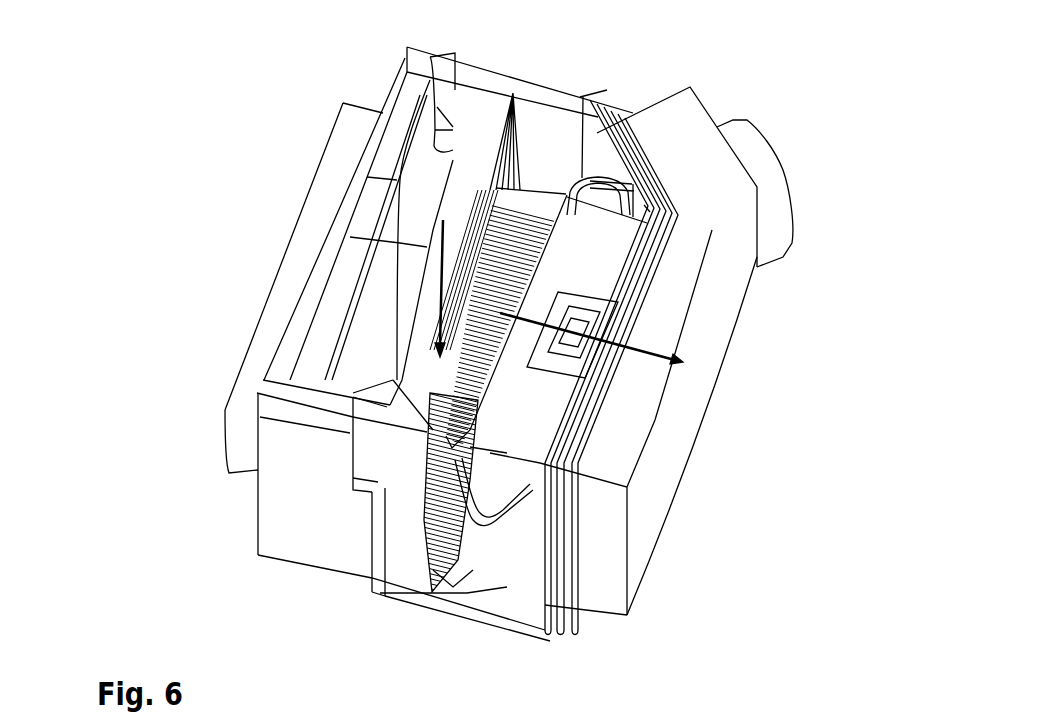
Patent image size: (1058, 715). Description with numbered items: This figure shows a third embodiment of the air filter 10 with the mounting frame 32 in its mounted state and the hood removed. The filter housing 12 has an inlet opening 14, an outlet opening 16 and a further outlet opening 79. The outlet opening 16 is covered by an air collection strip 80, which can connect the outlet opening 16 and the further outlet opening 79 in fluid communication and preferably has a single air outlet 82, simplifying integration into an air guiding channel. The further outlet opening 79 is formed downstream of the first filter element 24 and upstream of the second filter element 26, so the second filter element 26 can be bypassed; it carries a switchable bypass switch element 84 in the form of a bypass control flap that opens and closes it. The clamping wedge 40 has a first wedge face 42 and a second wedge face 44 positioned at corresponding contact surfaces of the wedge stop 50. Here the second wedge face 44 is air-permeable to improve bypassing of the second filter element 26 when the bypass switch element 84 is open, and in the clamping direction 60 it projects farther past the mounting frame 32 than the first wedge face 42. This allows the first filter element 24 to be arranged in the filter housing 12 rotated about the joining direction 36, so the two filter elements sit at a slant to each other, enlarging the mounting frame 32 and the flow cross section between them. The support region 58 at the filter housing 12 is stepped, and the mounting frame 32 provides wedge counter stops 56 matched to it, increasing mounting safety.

The air filter 10 is at (732, 80).
The filter housing 12 is at (272, 535).
The inlet opening 14 is at (240, 283).
The outlet opening 16 is at (624, 437).
The first filter element 24 is at (452, 190).
The second filter element 26 is at (600, 283).
The mounting frame 32 is at (462, 143).
The joining direction 36 is at (443, 281).
The clamping wedge 40 is at (455, 512).
The first wedge face 42 is at (475, 520).
The second wedge face 44 is at (522, 190).
The wedge stop 50 is at (522, 535).
The wedge counter stops 56 is at (438, 88).
The support region 58 is at (437, 125).
The clamping direction 60 is at (683, 362).
The further outlet opening 79 is at (657, 207).
The air collection strip 80 is at (638, 528).
The air outlet 82 is at (805, 177).
The bypass switch element 84 is at (602, 180).